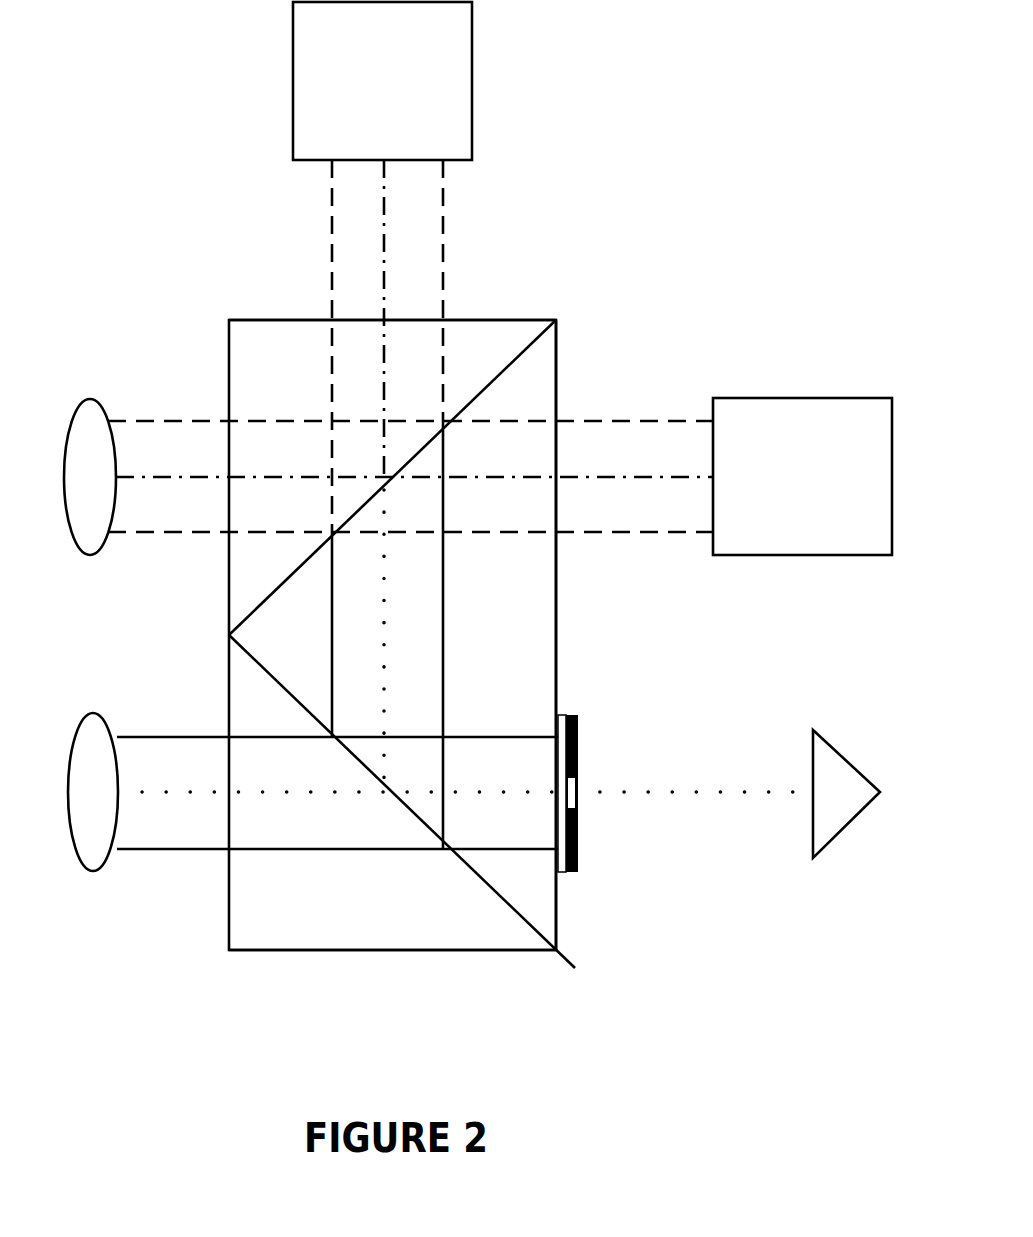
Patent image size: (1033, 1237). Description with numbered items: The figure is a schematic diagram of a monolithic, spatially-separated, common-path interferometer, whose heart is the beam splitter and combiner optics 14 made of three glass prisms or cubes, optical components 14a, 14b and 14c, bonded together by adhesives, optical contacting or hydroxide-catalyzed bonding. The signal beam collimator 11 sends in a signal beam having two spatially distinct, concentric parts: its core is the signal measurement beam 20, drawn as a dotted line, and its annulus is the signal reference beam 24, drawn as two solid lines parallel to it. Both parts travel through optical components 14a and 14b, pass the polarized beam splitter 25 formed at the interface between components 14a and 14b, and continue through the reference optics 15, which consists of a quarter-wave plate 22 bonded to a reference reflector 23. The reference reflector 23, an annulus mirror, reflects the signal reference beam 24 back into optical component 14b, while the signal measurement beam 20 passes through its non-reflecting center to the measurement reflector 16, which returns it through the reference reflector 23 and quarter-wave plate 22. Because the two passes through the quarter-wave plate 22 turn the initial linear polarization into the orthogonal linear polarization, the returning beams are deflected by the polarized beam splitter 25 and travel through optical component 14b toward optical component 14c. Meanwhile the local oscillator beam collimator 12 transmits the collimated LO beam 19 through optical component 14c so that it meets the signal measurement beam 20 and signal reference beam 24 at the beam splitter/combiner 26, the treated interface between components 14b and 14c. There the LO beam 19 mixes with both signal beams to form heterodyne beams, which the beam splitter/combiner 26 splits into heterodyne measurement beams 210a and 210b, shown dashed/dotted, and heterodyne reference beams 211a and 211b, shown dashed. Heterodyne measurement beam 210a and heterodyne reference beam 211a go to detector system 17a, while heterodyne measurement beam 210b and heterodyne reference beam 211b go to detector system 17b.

The signal beam collimator 11 is at (72, 737).
The local oscillator beam collimator 12 is at (72, 421).
The beam splitter and combiner optics 14 is at (601, 252).
The optical component 14a is at (262, 950).
The optical component 14b is at (566, 630).
The optical component 14c is at (226, 320).
The reference optics 15 is at (609, 778).
The measurement reflector 16 is at (848, 763).
The detector system 17a is at (473, 45).
The detector system 17b is at (858, 399).
The LO beam 19 is at (176, 409).
The signal measurement beam 20 is at (702, 792).
The quarter-wave plate 22 is at (560, 715).
The reference reflector 23 is at (580, 862).
The signal reference beam 24 is at (165, 737).
The polarized beam splitter 25 is at (414, 814).
The beam splitter/combiner 26 is at (555, 322).
The heterodyne measurement beam 210a is at (407, 251).
The heterodyne measurement beam 210b is at (668, 477).
The heterodyne reference beam 211a is at (330, 203).
The heterodyne reference beam 211b is at (655, 421).